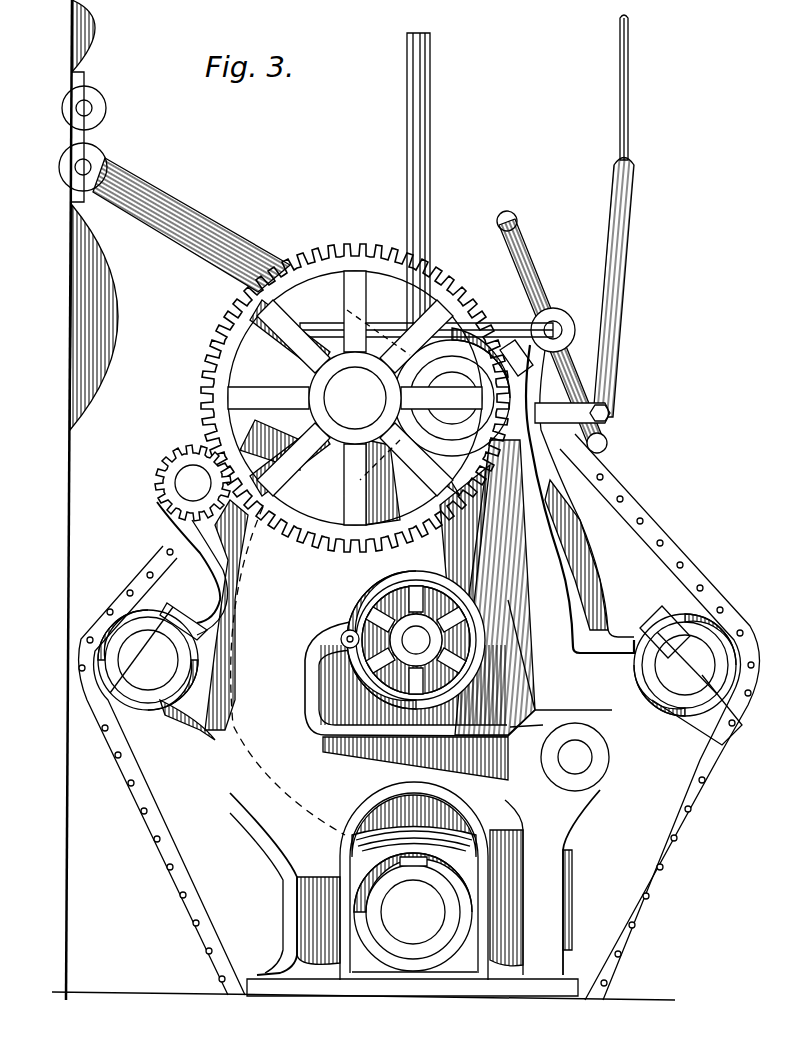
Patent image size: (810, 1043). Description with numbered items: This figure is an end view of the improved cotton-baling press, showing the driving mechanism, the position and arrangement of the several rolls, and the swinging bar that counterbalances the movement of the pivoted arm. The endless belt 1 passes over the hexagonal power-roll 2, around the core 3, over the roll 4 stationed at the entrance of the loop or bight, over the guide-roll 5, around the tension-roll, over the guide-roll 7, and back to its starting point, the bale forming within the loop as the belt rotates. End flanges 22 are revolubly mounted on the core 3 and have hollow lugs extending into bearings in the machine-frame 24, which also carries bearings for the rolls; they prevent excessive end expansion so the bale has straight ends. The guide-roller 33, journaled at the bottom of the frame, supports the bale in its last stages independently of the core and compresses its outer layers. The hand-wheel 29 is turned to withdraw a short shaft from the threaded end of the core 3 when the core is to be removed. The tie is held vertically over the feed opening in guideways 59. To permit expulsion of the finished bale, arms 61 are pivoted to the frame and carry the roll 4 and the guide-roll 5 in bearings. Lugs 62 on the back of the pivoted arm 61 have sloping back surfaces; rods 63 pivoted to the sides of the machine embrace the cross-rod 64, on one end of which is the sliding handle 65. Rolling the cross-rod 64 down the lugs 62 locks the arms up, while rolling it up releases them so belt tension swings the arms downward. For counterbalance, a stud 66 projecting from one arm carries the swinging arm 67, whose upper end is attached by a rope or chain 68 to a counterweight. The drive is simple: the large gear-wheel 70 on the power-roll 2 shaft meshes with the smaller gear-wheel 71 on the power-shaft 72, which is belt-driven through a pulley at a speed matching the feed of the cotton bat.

The endless belt 1 is at (626, 515).
The hexagonal power-roll 2 is at (355, 398).
The core 3 is at (416, 640).
The roll 4 is at (452, 392).
The guide-roll 5 is at (688, 675).
The guide-roll 7 is at (152, 656).
The end flanges 22 is at (612, 600).
The machine-frame 24 is at (345, 618).
The hand-wheel 29 is at (355, 625).
The guide-roller 33 is at (413, 912).
The guideways 59 is at (407, 140).
The pivoted arms 61 is at (495, 587).
The lugs 62 is at (521, 358).
The pivoted rods 63 is at (502, 322).
The cross-rod 64 is at (556, 324).
The sliding handle 65 is at (550, 329).
The stud 66 is at (607, 422).
The swinging arm 67 is at (625, 288).
The rope or chain 68 is at (643, 87).
The large gear-wheel 70 is at (330, 250).
The smaller gear-wheel 71 is at (190, 452).
The power-shaft 72 is at (160, 503).